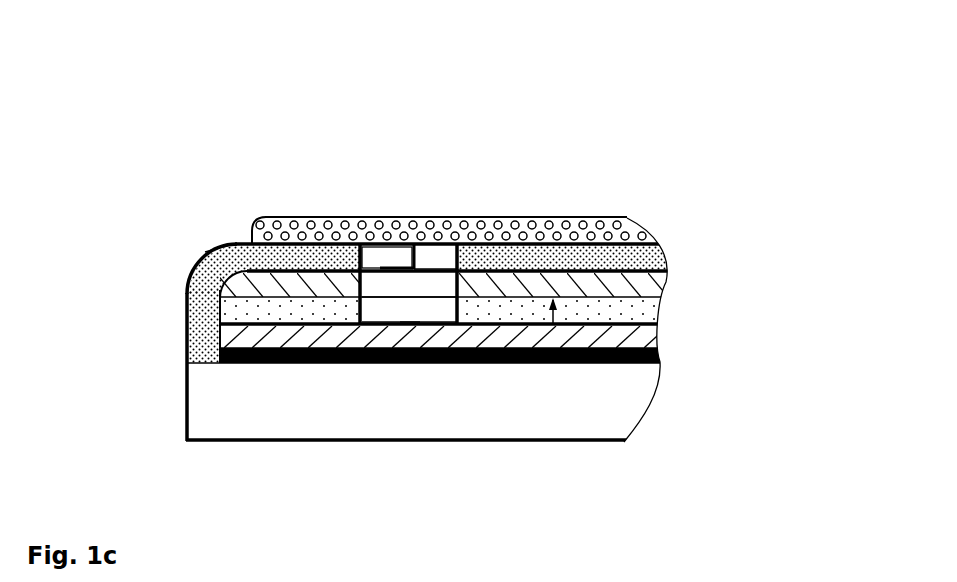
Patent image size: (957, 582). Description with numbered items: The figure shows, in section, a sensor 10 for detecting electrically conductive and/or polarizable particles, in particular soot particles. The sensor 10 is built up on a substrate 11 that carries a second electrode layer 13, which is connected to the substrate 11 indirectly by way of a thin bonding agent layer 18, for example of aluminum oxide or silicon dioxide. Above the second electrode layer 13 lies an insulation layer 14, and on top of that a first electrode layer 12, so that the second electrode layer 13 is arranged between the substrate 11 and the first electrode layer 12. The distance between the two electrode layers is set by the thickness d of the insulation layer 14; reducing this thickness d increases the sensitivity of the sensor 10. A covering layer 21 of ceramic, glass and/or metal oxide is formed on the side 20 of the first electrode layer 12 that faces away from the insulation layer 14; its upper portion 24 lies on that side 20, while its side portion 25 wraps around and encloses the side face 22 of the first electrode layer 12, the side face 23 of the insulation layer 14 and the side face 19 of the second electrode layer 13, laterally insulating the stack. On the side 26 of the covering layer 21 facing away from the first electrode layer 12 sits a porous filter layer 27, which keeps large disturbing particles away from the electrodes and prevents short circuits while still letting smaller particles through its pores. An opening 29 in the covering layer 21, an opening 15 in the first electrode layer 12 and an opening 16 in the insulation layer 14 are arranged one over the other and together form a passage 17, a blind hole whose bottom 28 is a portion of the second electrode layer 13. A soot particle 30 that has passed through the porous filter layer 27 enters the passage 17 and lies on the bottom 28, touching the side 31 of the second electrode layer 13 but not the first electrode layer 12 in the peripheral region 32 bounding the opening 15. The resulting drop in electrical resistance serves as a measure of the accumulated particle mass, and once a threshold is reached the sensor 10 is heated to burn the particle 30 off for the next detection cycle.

The sensor 10 is at (545, 138).
The substrate 11 is at (600, 408).
The first electrode layer 12 is at (637, 285).
The second electrode layer 13 is at (637, 342).
The insulation layer 14 is at (647, 313).
The opening 15 is at (409, 289).
The opening 16 is at (409, 313).
The passage 17 is at (414, 245).
The bonding agent layer 18 is at (660, 360).
The side face 19 is at (213, 340).
The side 20 is at (668, 260).
The covering layer 21 is at (240, 247).
The side face 22 is at (203, 250).
The side face 23 is at (193, 307).
The upper portion 24 is at (310, 257).
The side portion 25 is at (200, 283).
The side 26 is at (217, 248).
The porous filter layer 27 is at (627, 222).
The bottom 28 is at (458, 325).
The opening 29 is at (387, 257).
The soot particle 30 is at (410, 323).
The side 31 is at (358, 325).
The peripheral region 32 is at (442, 270).
The thickness d is at (552, 323).